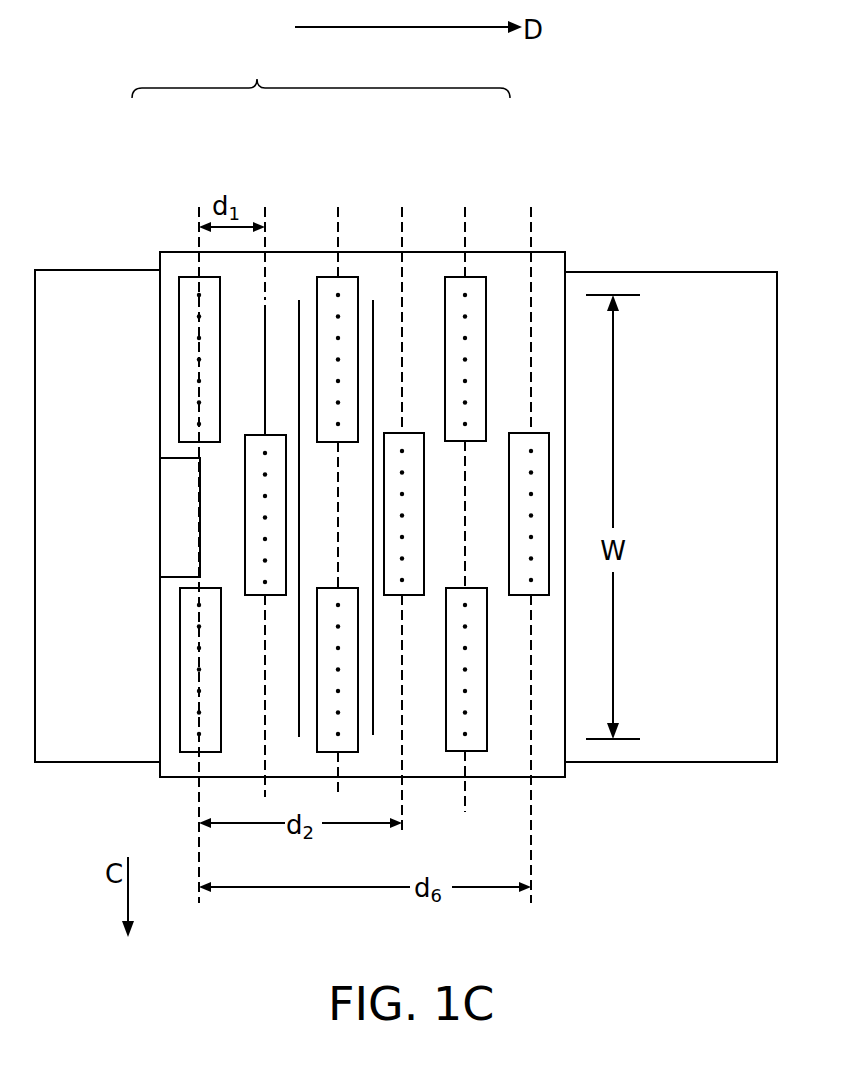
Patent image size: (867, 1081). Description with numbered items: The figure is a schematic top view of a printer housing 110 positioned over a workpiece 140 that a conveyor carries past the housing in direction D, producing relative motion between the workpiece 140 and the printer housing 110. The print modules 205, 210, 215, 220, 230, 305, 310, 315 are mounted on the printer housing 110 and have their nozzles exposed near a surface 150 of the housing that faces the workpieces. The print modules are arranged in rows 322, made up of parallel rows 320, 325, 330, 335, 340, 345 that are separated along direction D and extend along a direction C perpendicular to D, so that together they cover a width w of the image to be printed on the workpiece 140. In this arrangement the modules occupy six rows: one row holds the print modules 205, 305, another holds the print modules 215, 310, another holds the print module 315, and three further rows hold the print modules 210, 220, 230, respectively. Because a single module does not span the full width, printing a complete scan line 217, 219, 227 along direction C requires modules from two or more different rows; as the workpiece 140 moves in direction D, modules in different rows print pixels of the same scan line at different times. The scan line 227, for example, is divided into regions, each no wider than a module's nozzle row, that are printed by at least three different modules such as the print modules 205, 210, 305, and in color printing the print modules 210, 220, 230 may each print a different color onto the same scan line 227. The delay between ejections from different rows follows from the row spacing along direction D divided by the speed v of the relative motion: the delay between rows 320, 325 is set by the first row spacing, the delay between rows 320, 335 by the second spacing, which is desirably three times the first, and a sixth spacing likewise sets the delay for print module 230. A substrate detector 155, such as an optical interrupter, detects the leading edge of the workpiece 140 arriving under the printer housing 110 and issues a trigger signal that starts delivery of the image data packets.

The printer housing 110 is at (644, 156).
The workpiece 140 is at (717, 684).
The surface 150 is at (548, 303).
The substrate detector 155 is at (160, 527).
The print module 205 is at (178, 357).
The print module 210 is at (287, 562).
The print module 215 is at (317, 424).
The scan line 217 is at (265, 305).
The scan line 219 is at (299, 300).
The print module 220 is at (424, 530).
The scan line 227 is at (373, 325).
The print module 230 is at (549, 510).
The print module 305 is at (180, 660).
The print module 310 is at (317, 713).
The print module 315 is at (487, 726).
The print module row 320 is at (199, 207).
The rows 322 is at (321, 71).
The print module row 325 is at (265, 207).
The print module row 330 is at (338, 207).
The print module row 335 is at (402, 207).
The print module row 340 is at (465, 207).
The print module row 345 is at (531, 207).